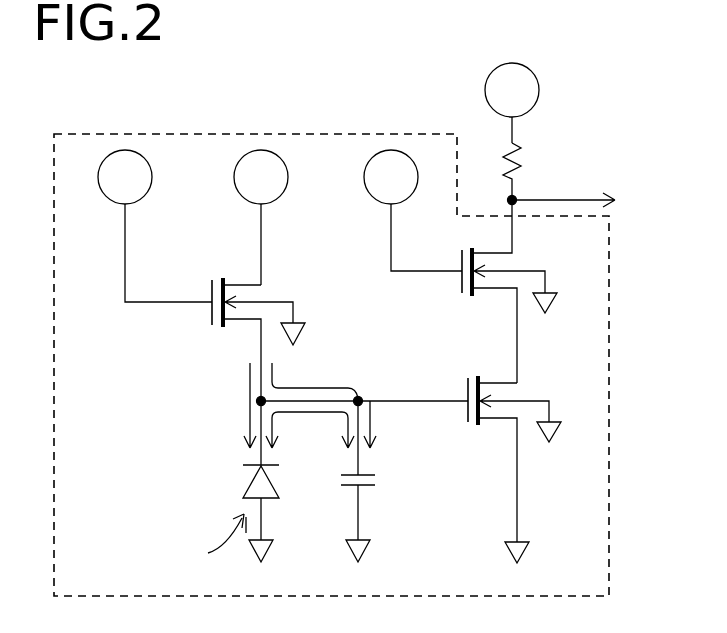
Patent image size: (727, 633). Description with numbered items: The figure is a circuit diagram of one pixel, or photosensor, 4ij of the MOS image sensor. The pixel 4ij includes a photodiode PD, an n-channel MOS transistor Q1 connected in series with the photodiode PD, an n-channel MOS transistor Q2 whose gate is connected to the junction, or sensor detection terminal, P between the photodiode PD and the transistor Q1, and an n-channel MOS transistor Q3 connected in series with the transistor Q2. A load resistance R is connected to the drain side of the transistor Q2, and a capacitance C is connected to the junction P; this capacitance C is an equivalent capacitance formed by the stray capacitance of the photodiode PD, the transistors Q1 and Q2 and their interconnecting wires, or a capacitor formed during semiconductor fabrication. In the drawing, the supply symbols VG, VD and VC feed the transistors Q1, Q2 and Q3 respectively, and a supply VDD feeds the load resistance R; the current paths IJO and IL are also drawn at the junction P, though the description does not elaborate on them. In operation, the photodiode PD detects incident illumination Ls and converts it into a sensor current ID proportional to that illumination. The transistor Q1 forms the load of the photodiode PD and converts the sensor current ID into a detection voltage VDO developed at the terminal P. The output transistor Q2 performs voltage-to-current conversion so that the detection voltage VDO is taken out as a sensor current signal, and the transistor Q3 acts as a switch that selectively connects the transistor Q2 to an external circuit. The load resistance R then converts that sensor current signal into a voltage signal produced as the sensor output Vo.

The pixel (photosensor) 4ij is at (218, 134).
The gate voltage source VG is at (155, 226).
The drain voltage source VD is at (261, 217).
The control voltage source VC is at (413, 210).
The supply voltage source VDD is at (512, 103).
The load resistance R is at (523, 173).
The sensor output Vo is at (579, 198).
The n-channel MOS transistor Q1 is at (243, 327).
The n-channel MOS transistor Q2 is at (466, 475).
The n-channel MOS transistor Q3 is at (501, 293).
The junction (sensor detection terminal) P is at (362, 397).
The sensor current ID is at (244, 405).
The junction leakage current IJO is at (315, 379).
The leakage current IL is at (321, 424).
The detection voltage VDO is at (410, 386).
The photodiode PD is at (249, 498).
The incident illumination Ls is at (215, 542).
The capacitance C is at (364, 498).